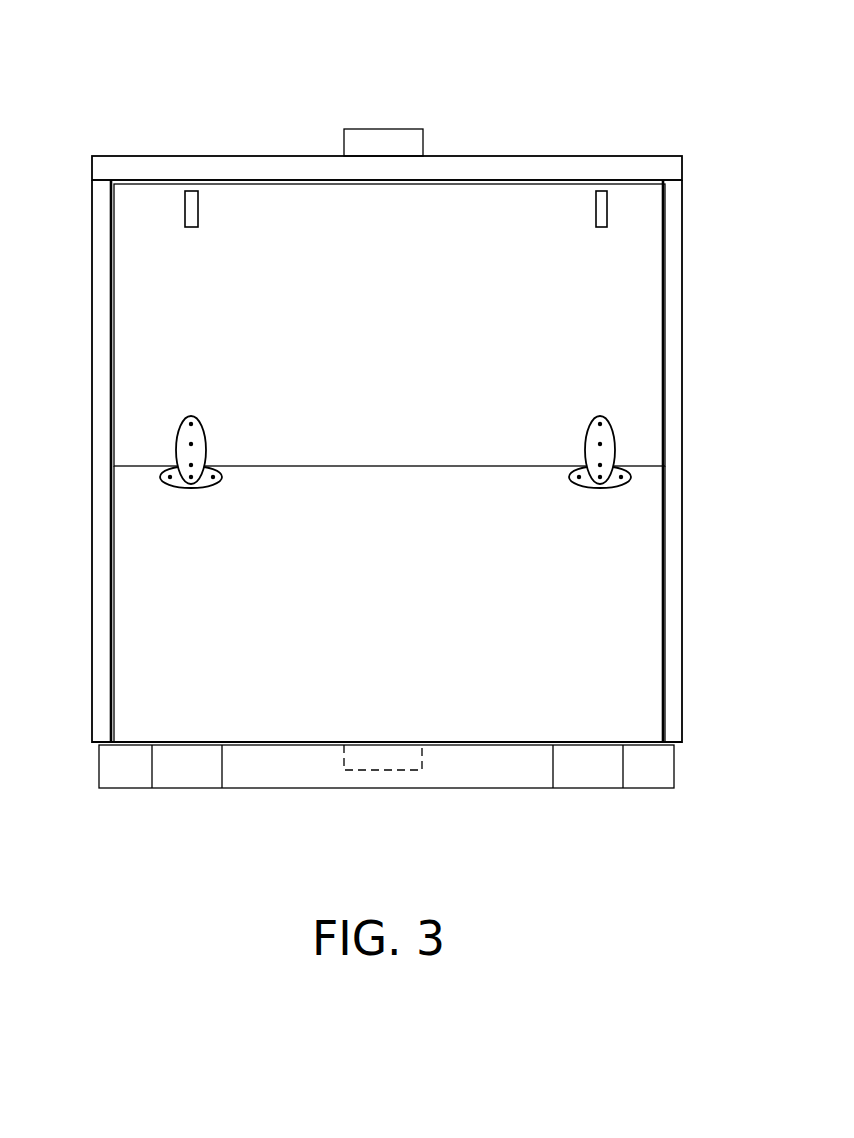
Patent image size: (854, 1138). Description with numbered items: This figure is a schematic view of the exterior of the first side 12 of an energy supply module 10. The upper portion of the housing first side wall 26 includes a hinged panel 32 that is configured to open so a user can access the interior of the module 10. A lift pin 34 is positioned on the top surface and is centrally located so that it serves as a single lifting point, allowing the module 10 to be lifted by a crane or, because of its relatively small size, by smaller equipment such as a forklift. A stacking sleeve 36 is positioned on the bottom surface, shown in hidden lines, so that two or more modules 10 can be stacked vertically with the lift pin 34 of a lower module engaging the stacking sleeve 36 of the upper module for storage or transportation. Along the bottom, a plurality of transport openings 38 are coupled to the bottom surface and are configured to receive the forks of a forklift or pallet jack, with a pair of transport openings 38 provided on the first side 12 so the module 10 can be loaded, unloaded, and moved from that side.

The energy supply module 10 is at (137, 92).
The first side 12 is at (600, 580).
The housing first side wall 26 is at (632, 658).
The hinged panel 32 is at (160, 287).
The lift pin 34 is at (407, 140).
The stacking sleeve 36 is at (380, 759).
The transport openings 38 is at (587, 772).